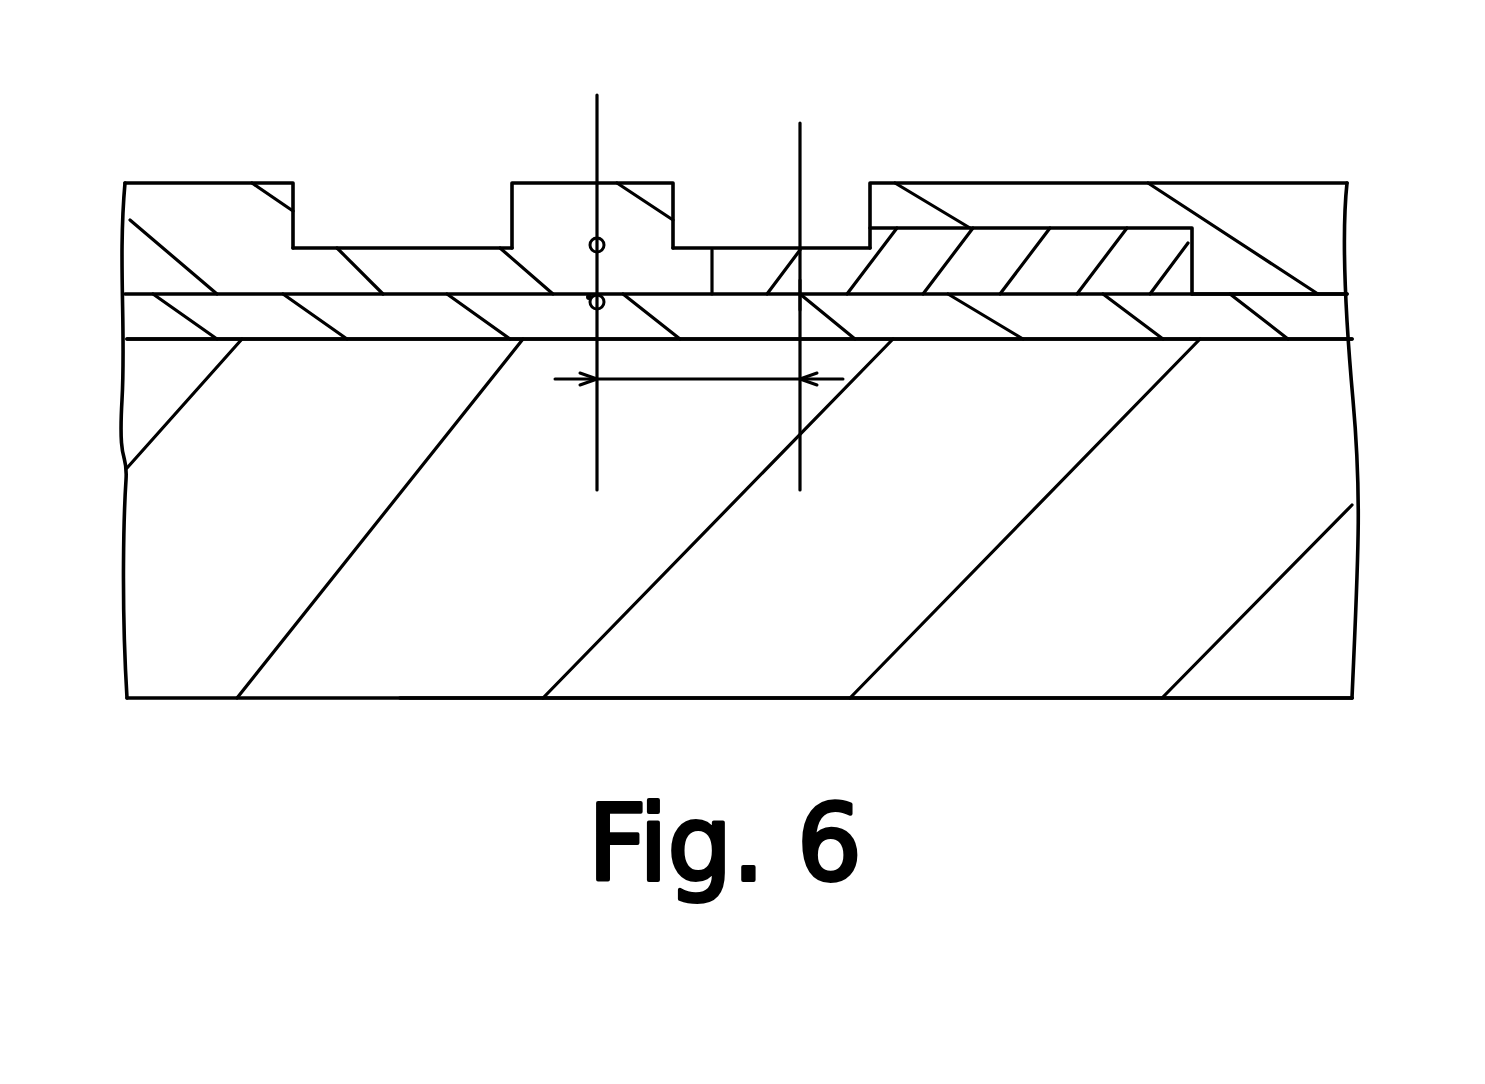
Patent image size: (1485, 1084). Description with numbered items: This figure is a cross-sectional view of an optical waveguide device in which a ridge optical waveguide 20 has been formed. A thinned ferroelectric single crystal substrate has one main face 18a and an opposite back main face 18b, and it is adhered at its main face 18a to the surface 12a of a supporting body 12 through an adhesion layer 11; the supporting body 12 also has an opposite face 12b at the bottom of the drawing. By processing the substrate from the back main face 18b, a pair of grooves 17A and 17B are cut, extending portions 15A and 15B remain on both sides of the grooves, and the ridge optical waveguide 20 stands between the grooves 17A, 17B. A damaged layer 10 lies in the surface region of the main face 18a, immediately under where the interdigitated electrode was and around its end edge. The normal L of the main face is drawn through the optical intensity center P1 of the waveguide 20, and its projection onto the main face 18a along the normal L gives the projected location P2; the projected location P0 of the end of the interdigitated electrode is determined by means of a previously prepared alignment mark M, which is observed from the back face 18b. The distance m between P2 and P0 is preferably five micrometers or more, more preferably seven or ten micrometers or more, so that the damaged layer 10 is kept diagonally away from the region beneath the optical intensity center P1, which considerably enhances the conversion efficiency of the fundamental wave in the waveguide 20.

The damaged layer 10 is at (1040, 277).
The adhesion layer 11 is at (1338, 322).
The supporting body 12 is at (1303, 528).
The surface of the supporting body 12a is at (1270, 337).
The substrate bottom surface 12b is at (1257, 698).
The extending portion 15A is at (205, 197).
The extending portion 15B is at (1070, 190).
The groove 17A is at (357, 247).
The groove 17B is at (833, 248).
The one main face of the substrate 18a is at (1253, 294).
The other main face of the substrate 18b is at (1230, 198).
The ridge optical waveguide 20 is at (645, 195).
The normal of the main face L is at (597, 118).
The projected location of the end of the interdigitated electrode P0 is at (800, 294).
The optical intensity center P1 is at (588, 238).
The projected location of the optical intensity center P2 is at (585, 305).
The alignment mark M is at (588, 297).
The distance m is at (662, 385).